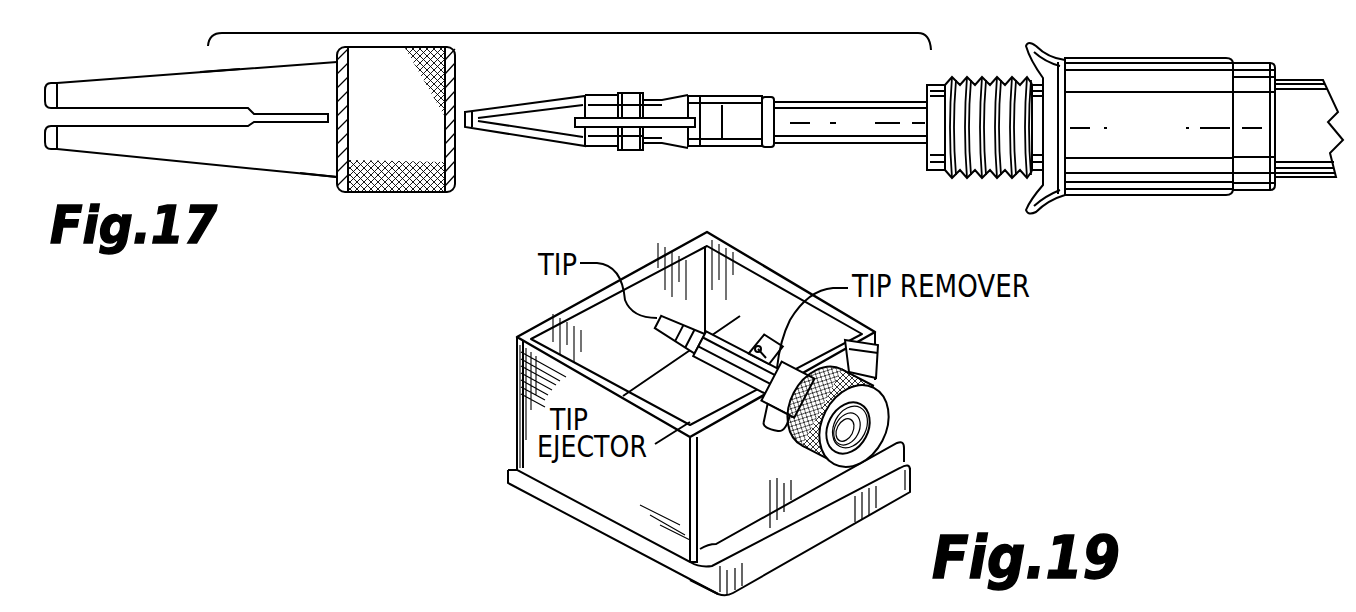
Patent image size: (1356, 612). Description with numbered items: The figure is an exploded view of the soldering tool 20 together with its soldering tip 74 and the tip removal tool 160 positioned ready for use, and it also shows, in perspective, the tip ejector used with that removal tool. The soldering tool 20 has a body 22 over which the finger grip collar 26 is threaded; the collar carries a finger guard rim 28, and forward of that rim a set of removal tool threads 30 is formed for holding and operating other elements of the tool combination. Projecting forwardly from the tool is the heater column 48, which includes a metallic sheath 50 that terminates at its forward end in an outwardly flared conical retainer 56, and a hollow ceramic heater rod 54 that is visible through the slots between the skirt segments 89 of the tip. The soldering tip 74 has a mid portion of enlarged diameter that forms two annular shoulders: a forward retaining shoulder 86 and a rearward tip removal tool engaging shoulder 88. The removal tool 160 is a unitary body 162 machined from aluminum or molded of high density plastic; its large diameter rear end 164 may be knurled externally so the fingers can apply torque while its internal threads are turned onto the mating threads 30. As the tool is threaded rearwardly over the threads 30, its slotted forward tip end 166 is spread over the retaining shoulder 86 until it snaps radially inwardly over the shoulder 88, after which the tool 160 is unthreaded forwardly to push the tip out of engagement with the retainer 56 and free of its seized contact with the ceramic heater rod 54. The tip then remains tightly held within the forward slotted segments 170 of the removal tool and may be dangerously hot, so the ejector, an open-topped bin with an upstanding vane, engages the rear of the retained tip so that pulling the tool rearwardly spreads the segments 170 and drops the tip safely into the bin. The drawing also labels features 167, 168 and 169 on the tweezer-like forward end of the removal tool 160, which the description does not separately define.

The soldering tool 20 is at (1135, 117).
The body 22 is at (1318, 140).
The finger grip collar 26 is at (1170, 134).
The finger guard rim 28 is at (1043, 207).
The removal tool threads 30 is at (993, 178).
The heater column 48 is at (851, 152).
The metallic sheath 50 is at (860, 138).
The ceramic heater rod 54 is at (743, 120).
The conical retainer 56 is at (775, 102).
The soldering tip 74 is at (651, 134).
The forward retaining shoulder 86 is at (618, 93).
The tip removal tool engaging shoulder 88 is at (645, 150).
The skirt segments 89 is at (697, 133).
The tip removal tool 160 is at (387, 135).
The unitary body 162 is at (317, 178).
The rear end 164 is at (403, 194).
The slotted forward tip end 166 is at (113, 80).
The tapered surface 167 is at (224, 64).
The knob 168 is at (400, 46).
The gripping end 169 is at (44, 98).
The forward slotted segments 170 is at (198, 106).